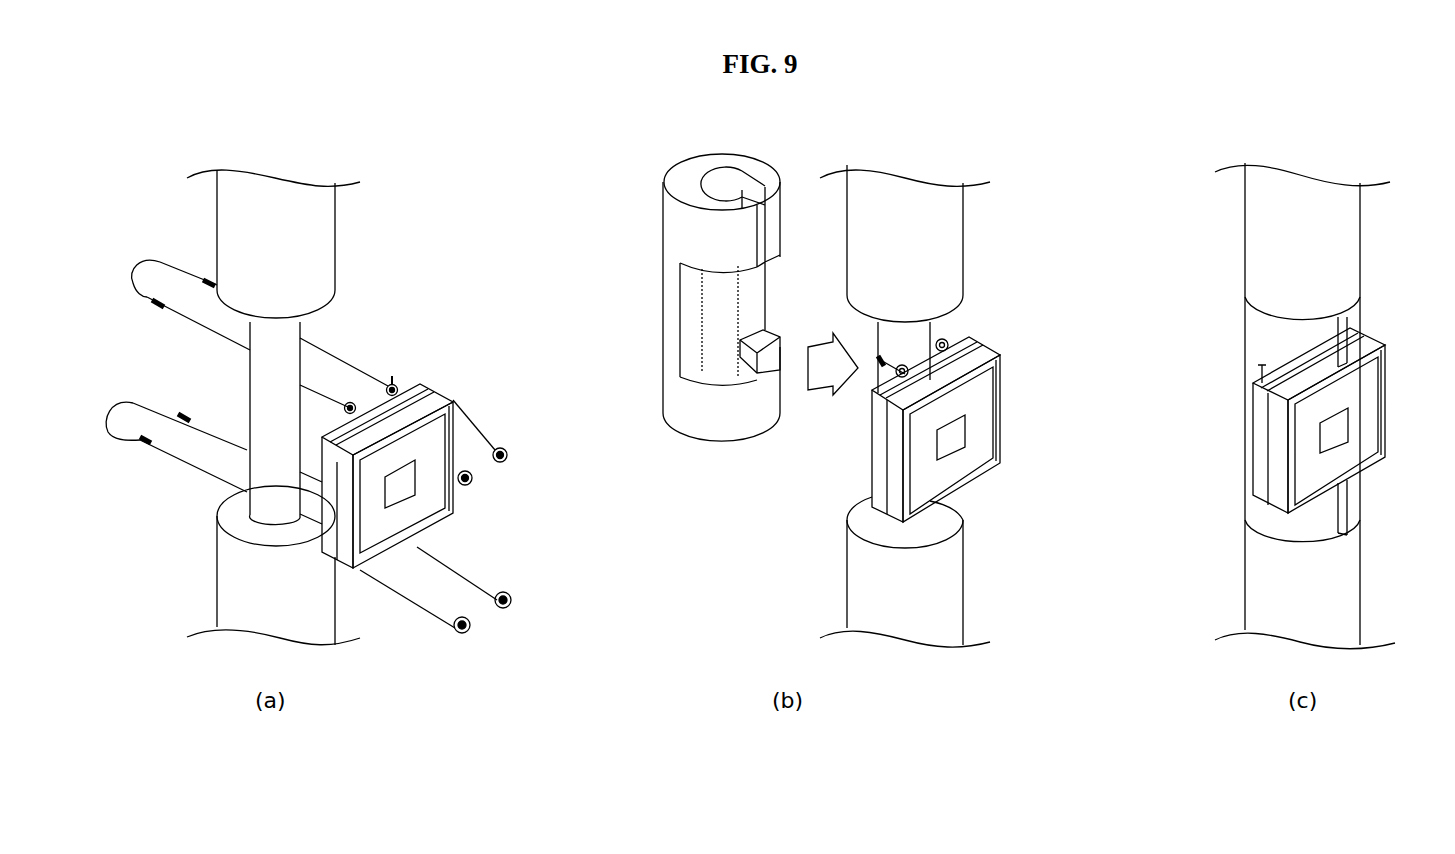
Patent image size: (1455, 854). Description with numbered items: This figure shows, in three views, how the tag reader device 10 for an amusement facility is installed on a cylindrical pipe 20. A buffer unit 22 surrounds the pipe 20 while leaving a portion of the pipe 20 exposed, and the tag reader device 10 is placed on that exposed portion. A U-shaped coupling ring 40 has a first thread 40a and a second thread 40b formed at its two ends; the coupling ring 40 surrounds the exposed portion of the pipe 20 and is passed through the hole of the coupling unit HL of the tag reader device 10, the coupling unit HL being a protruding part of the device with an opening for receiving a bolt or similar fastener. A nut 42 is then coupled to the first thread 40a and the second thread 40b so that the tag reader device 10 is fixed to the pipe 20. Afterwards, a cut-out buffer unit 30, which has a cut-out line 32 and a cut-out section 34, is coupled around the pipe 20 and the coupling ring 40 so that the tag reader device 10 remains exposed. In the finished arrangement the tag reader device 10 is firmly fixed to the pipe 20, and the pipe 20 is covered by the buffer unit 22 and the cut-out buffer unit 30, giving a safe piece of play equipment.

The tag reader device 10 is at (455, 510).
The cylindrical pipe 20 is at (248, 383).
The buffer unit 22 is at (322, 232).
The cut-out buffer unit 30 is at (664, 228).
The cut-out line 32 is at (768, 216).
The cut-out section 34 is at (720, 318).
The U-shaped coupling ring 40 is at (147, 268).
The first thread 40a is at (157, 311).
The second thread 40b is at (212, 279).
The nut 42 is at (472, 482).
The coupling unit HL is at (393, 384).